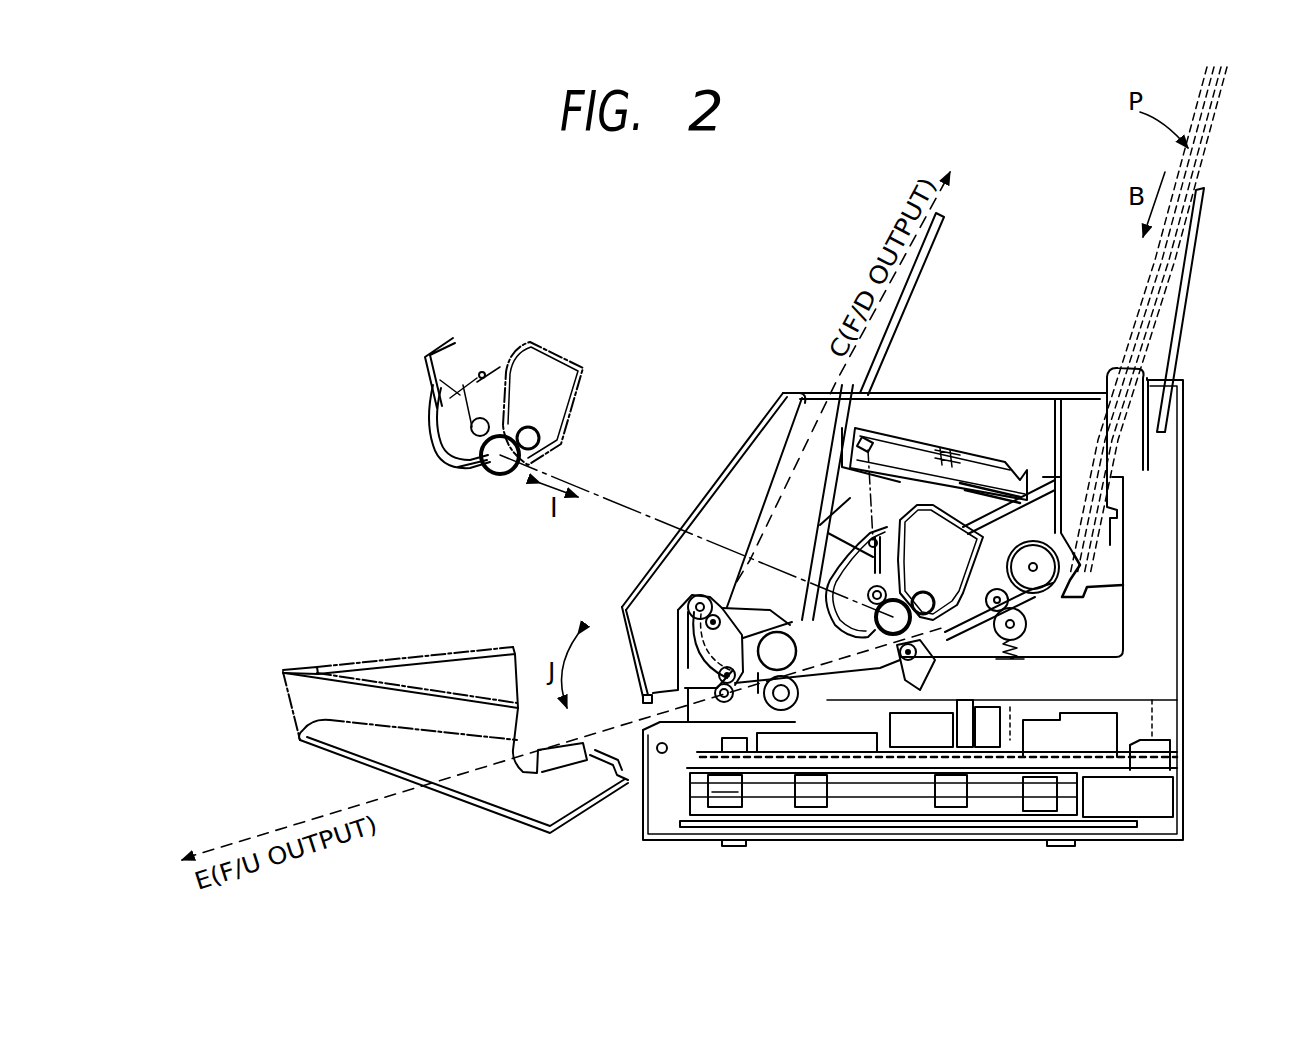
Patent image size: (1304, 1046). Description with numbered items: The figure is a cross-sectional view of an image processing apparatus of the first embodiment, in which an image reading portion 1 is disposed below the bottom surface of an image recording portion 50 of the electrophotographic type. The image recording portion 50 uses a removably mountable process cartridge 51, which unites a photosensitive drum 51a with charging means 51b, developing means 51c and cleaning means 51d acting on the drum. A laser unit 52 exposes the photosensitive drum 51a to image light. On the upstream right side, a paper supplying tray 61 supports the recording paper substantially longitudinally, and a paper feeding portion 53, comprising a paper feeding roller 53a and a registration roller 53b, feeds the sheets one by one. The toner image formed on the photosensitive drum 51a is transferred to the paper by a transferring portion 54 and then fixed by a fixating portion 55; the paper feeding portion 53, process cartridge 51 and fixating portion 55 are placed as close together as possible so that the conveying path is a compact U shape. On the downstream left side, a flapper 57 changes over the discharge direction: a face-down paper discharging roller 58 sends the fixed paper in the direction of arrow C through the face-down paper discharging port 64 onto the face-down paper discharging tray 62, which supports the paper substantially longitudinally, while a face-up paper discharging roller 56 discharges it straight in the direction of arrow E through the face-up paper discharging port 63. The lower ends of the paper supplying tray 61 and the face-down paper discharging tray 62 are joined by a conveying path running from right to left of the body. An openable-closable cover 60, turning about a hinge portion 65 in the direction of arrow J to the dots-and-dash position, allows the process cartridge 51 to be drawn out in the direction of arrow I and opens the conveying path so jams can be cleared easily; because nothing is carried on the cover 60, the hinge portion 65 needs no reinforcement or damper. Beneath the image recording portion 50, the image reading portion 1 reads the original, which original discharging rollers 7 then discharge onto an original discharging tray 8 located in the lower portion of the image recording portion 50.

The image reading portion 1 is at (895, 845).
The original discharging rollers 7 is at (730, 800).
The original discharging tray 8 is at (780, 812).
The image recording portion 50 is at (1040, 390).
The process cartridge 51 is at (533, 342).
The photosensitive drum 51a is at (497, 470).
The charging means 51b is at (471, 425).
The developing means 51c is at (530, 427).
The cleaning means 51d is at (443, 453).
The laser unit 52 is at (950, 452).
The paper feeding portion 53 is at (1128, 540).
The paper feeding roller 53a is at (1037, 578).
The registration roller 53b is at (1023, 630).
The transferring portion 54 is at (913, 660).
The fixating portion 55 is at (777, 633).
The face-up paper discharging roller 56 is at (655, 695).
The flapper 57 is at (680, 690).
The face-down paper discharging roller 58 is at (698, 598).
The openable-closable cover 60 is at (790, 612).
The paper supplying tray 61 is at (1187, 298).
The face-down paper discharging tray 62 is at (920, 285).
The face-up paper discharging port 63 is at (643, 700).
The face-down paper discharging port 64 is at (803, 392).
The hinge portion 65 is at (662, 754).